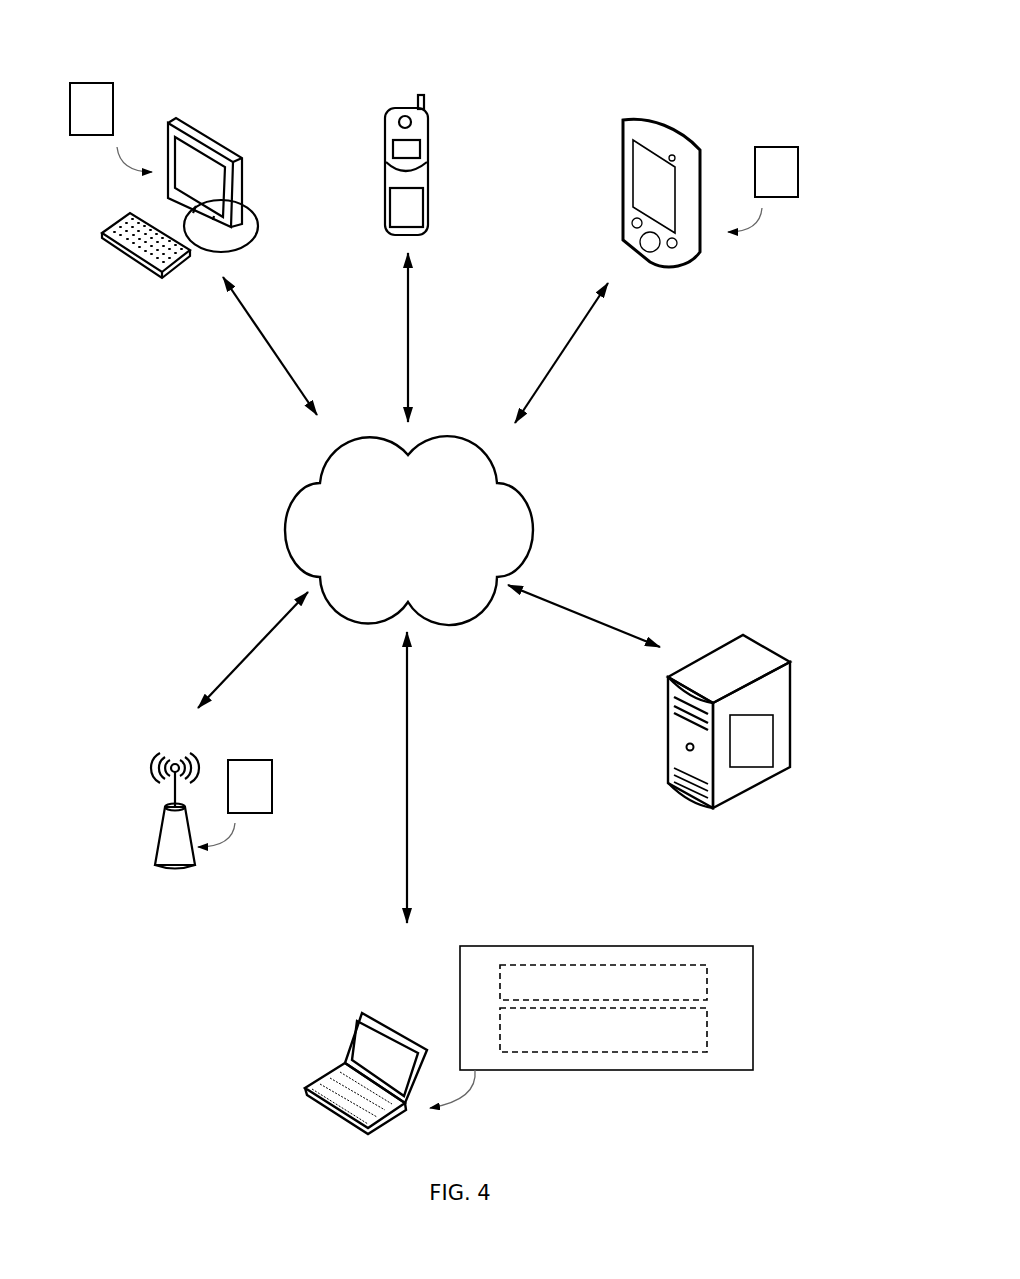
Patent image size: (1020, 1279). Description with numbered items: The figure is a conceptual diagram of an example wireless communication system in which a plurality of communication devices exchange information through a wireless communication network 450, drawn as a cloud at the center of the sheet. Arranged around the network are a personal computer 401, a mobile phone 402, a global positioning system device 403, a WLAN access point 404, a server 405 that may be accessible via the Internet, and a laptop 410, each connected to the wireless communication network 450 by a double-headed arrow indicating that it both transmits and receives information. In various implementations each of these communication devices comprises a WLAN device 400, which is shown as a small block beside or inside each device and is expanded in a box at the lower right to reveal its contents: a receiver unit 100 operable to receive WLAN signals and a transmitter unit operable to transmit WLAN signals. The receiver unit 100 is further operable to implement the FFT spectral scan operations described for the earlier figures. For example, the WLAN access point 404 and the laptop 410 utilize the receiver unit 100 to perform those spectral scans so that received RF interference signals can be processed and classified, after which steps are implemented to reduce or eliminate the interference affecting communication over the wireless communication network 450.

The WLAN device 400 is at (556, 946).
The personal computer 401 is at (218, 132).
The mobile phone 402 is at (395, 104).
The global positioning system device 403 is at (680, 122).
The WLAN access point 404 is at (166, 740).
The server 405 is at (724, 636).
The laptop 410 is at (401, 1028).
The wireless communication network 450 is at (409, 530).
The receiver unit 100 is at (603, 982).